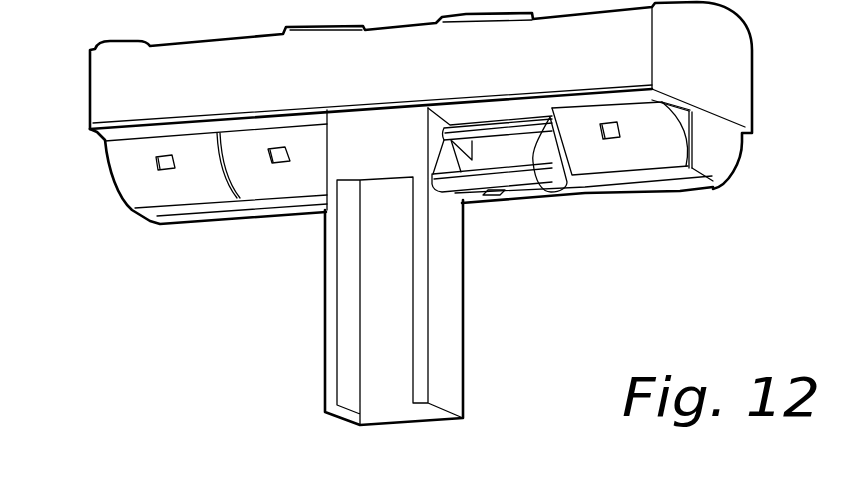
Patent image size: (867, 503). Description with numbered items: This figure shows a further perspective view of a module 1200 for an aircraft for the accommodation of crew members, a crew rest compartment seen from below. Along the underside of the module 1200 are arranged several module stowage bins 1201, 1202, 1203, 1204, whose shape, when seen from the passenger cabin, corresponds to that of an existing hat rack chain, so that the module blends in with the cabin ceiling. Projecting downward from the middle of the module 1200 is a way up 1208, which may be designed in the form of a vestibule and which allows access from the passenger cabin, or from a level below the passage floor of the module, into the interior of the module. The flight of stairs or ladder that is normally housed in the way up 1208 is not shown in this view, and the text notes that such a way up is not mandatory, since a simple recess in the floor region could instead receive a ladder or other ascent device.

The crew rest compartment or module 1200 is at (173, 318).
The module stowage bin 1201 is at (125, 177).
The module stowage bin 1202 is at (270, 183).
The module stowage bin 1203 is at (517, 186).
The module stowage bin 1204 is at (636, 158).
The way up 1208 is at (452, 347).